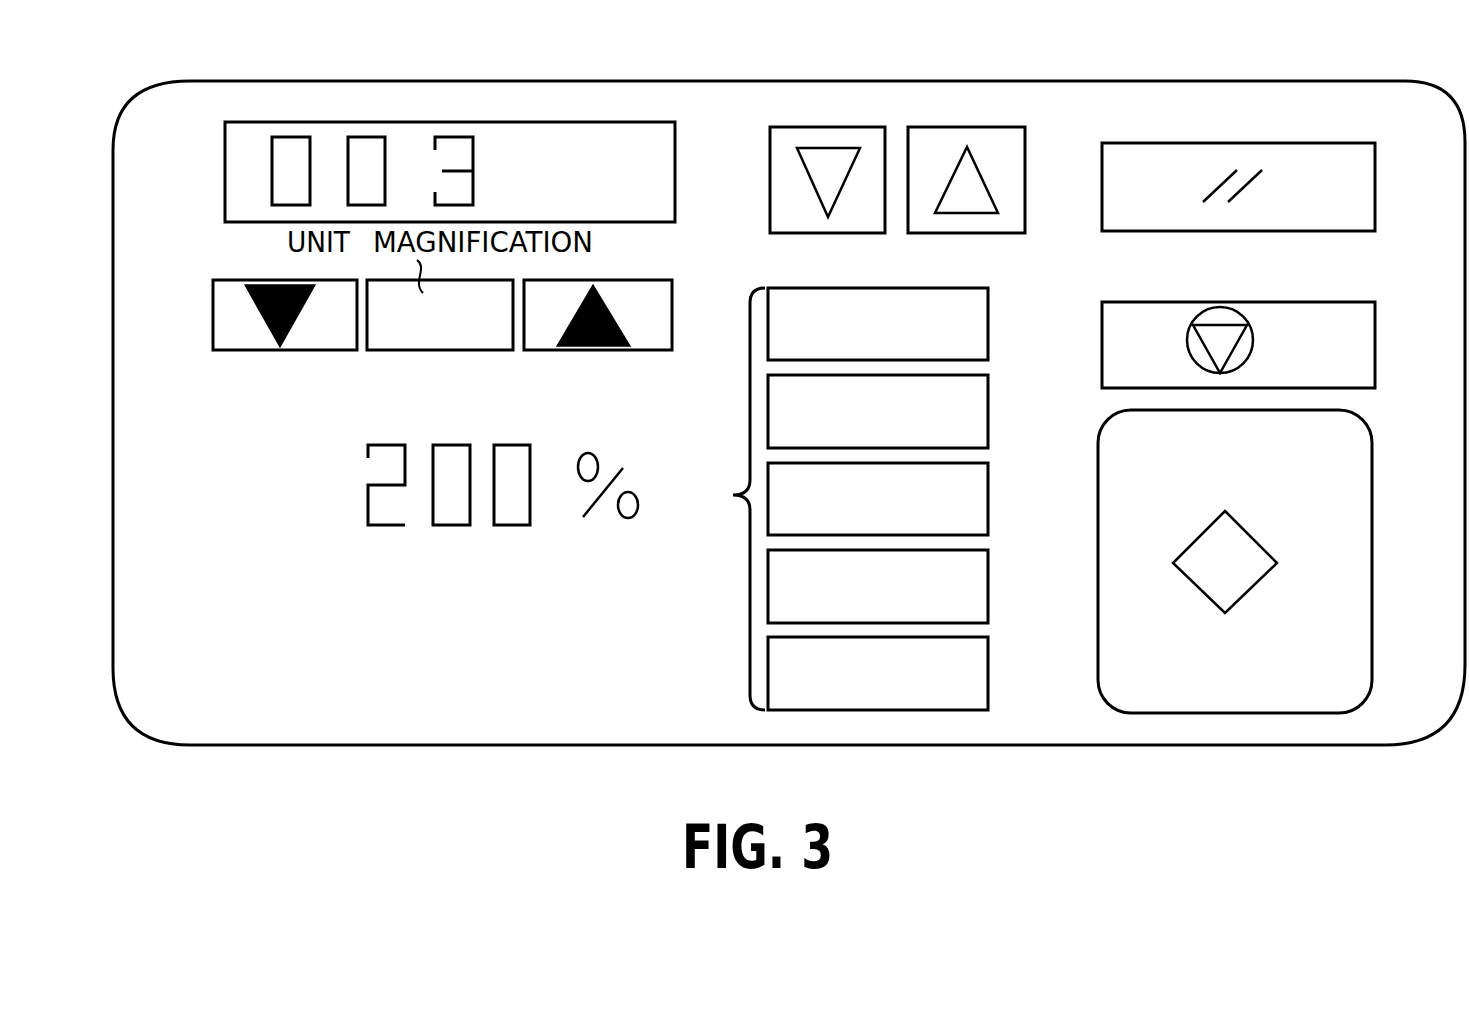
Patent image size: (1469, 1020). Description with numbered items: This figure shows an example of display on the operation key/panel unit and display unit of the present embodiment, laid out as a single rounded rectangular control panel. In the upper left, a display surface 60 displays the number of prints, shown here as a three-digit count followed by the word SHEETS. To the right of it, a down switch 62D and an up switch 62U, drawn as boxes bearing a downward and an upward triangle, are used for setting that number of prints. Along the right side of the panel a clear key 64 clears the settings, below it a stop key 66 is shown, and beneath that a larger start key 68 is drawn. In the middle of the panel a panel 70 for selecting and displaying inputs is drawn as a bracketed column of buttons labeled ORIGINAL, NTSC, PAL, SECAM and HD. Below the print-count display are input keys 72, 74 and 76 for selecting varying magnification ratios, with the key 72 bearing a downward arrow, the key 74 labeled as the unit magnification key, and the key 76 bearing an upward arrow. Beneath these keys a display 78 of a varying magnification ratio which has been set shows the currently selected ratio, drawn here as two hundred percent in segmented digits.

The display surface 60 is at (395, 138).
The down switch 62D is at (825, 133).
The up switch 62U is at (993, 135).
The clear key 64 is at (1358, 185).
The stop key 66 is at (1345, 363).
The start key 68 is at (1352, 527).
The panel 70 is at (731, 496).
The input key 72 is at (225, 326).
The input key 74 is at (420, 340).
The input key 76 is at (657, 336).
The display of a varying magnification ratio 78 is at (417, 538).